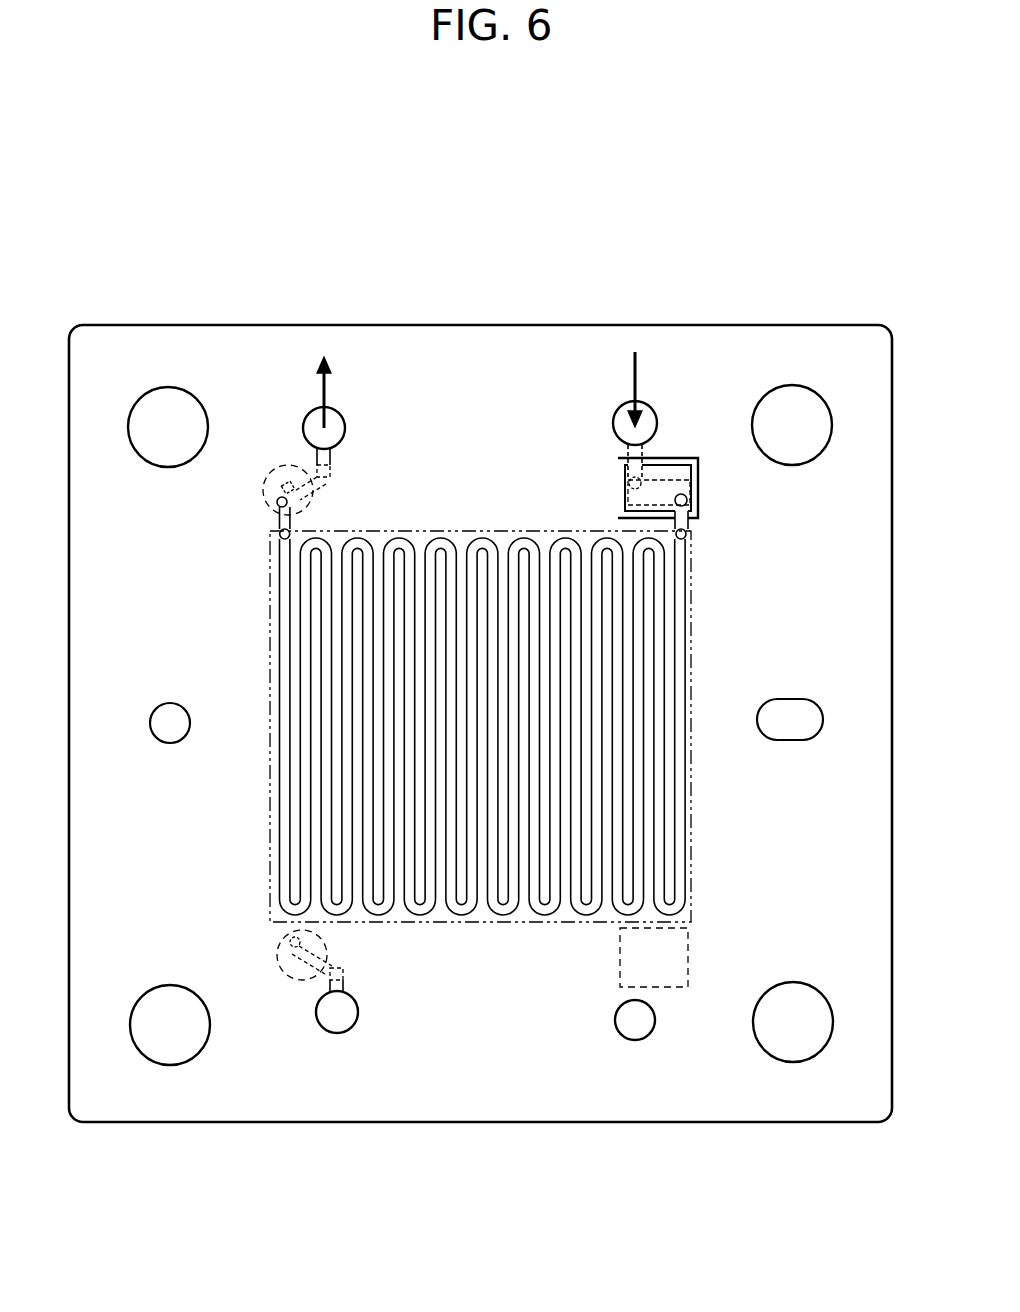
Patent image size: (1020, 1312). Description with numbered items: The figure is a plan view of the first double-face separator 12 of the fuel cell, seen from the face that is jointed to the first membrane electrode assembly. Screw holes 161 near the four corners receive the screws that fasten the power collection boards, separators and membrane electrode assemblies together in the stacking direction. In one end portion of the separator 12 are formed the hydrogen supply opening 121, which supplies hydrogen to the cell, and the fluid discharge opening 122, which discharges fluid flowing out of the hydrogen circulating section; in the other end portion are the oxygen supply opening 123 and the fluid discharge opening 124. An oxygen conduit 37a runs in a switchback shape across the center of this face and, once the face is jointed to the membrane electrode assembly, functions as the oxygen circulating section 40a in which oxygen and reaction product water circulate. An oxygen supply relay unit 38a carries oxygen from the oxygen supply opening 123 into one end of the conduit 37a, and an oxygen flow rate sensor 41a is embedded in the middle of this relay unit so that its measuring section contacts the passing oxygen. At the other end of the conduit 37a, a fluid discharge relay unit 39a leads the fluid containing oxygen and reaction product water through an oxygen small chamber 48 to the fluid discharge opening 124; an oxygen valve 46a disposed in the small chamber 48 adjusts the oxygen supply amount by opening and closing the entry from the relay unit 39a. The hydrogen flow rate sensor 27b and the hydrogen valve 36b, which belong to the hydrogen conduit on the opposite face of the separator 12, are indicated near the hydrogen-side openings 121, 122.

The first double-face separator 12 is at (512, 233).
The screw holes 161 is at (797, 388).
The fluid discharge opening 124 is at (350, 410).
The oxygen supply opening 123 is at (627, 455).
The oxygen small chamber 48 is at (288, 455).
The oxygen valve 46a is at (268, 468).
The fluid discharge relay unit 39a is at (275, 507).
The oxygen conduit 37a is at (447, 532).
The oxygen circulating section 40a is at (692, 640).
The oxygen flow rate sensor 41a is at (672, 456).
The oxygen supply relay unit 38a is at (682, 472).
The fluid discharge opening 122 is at (348, 1017).
The hydrogen valve 36b is at (282, 968).
The hydrogen supply opening 121 is at (633, 1025).
The hydrogen flow rate sensor 27b is at (680, 988).